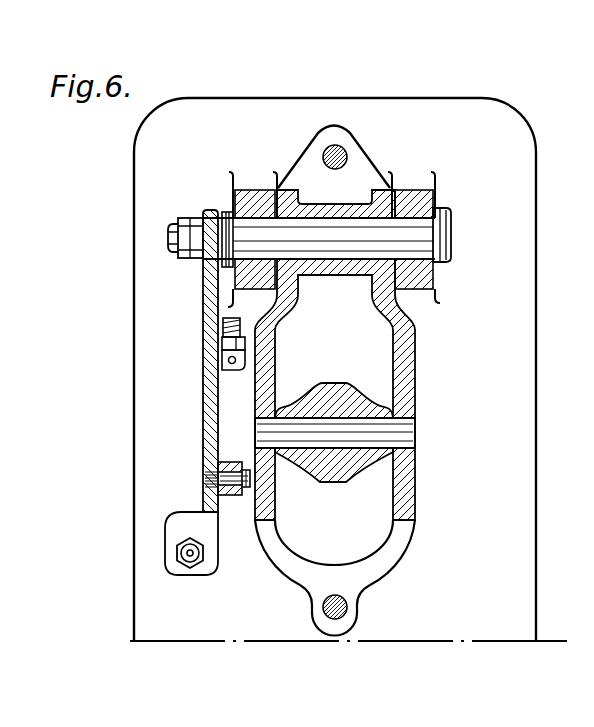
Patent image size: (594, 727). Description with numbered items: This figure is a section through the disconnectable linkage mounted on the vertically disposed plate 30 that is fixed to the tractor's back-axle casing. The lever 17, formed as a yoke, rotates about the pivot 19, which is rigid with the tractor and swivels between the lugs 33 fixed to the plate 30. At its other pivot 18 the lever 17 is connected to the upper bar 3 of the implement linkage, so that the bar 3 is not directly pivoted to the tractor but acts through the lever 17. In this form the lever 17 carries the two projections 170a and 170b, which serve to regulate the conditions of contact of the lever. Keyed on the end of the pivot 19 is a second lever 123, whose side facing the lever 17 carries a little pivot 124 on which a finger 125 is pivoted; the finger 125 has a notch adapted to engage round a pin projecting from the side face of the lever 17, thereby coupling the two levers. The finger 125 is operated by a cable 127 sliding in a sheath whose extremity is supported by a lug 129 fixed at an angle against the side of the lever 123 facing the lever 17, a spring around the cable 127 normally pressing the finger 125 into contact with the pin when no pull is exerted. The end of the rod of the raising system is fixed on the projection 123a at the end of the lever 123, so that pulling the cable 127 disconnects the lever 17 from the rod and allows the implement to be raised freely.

The plate 30 is at (416, 111).
The projection 170b is at (323, 153).
The lugs 33 is at (250, 201).
The pivot 19 is at (326, 248).
The lever 17 is at (408, 372).
The projection 170a is at (316, 604).
The upper bar 3 is at (337, 470).
The lever 123 is at (214, 300).
The projection 123a is at (190, 525).
The pivot 18 is at (199, 560).
The lug 129 is at (238, 366).
The cable 127 is at (228, 360).
The finger 125 is at (221, 462).
The little pivot 124 is at (212, 480).